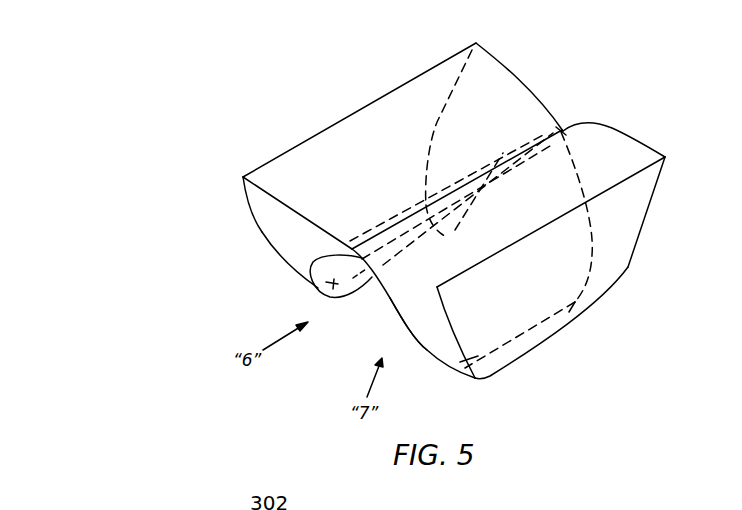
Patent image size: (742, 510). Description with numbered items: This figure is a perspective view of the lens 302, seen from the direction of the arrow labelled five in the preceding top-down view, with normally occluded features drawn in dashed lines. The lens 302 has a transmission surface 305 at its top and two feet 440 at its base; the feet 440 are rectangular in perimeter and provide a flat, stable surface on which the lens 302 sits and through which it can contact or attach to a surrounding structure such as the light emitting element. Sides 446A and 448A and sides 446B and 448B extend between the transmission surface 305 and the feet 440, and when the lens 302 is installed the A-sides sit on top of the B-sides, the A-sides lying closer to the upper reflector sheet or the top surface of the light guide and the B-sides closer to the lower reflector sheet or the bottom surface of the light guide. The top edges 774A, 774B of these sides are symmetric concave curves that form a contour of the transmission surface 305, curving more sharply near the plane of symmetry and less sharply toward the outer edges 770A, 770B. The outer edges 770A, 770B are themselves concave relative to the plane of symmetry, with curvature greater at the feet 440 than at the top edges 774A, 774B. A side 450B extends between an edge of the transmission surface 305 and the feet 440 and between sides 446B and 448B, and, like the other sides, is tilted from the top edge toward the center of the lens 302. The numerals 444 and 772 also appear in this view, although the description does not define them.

The lens 302 is at (252, 84).
The transmission surface 305 is at (378, 193).
The feet 440 is at (433, 235).
The channel axis 444 is at (496, 171).
The side 446A is at (267, 228).
The side 446B is at (437, 332).
The side 448A is at (447, 145).
The side 448B is at (634, 239).
The side 450B is at (580, 277).
The outer edge 770A is at (253, 214).
The outer edge 770B is at (441, 303).
The groove 772 is at (393, 305).
The top edge 774A is at (513, 72).
The top edge 774B is at (643, 140).